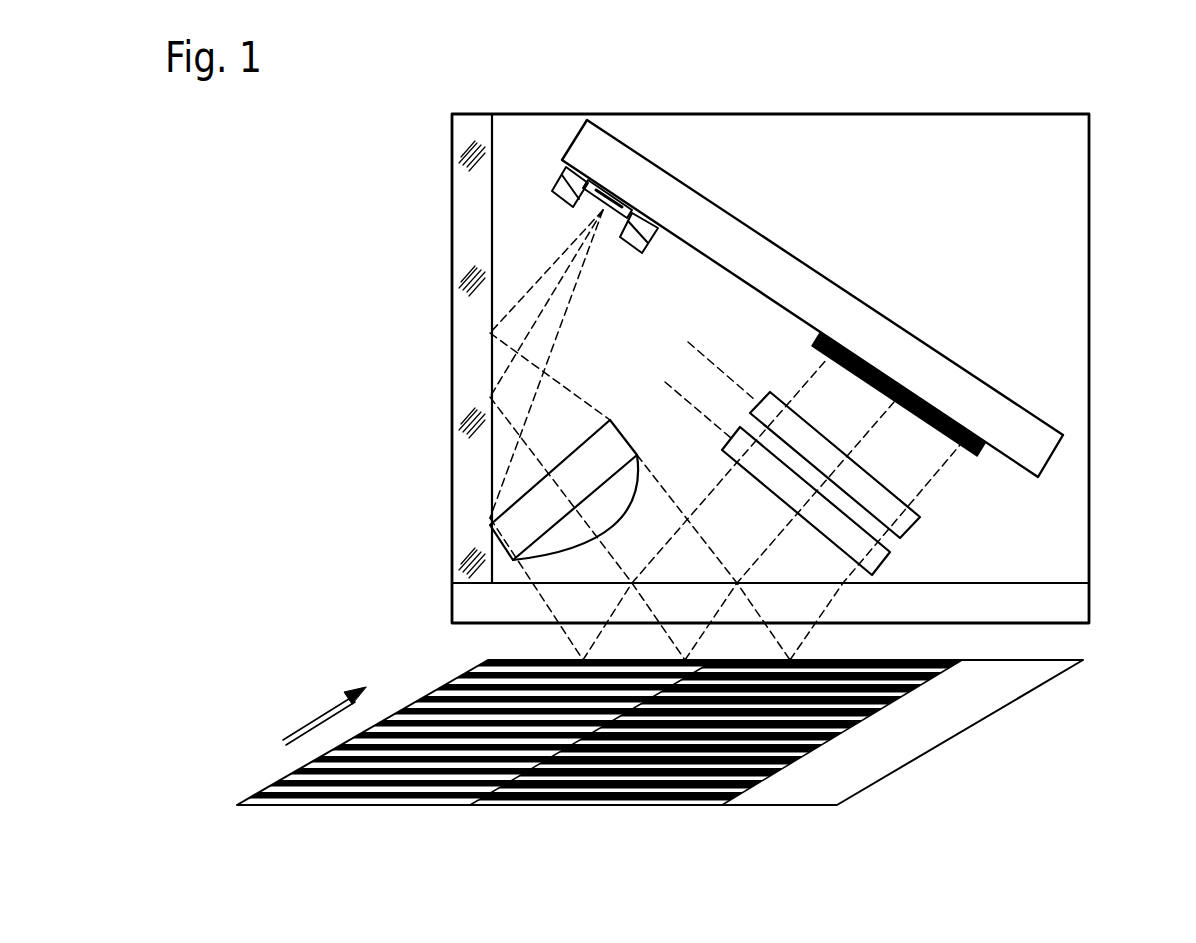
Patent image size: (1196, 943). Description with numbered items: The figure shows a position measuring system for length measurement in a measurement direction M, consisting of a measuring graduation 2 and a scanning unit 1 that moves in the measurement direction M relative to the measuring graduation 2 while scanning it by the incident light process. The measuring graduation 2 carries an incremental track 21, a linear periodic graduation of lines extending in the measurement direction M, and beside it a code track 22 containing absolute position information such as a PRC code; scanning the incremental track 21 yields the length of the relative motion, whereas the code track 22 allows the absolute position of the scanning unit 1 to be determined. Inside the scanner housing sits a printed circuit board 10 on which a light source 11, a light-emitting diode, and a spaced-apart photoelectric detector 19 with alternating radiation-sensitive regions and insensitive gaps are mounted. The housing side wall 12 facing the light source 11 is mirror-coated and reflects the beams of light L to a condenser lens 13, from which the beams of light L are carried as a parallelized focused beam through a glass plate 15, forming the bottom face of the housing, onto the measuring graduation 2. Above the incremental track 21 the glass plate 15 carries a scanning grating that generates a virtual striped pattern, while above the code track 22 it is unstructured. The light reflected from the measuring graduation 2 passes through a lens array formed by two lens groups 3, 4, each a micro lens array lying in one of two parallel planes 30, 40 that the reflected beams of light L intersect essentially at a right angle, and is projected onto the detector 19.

The scanning unit 1 is at (1084, 102).
The measuring graduation 2 is at (966, 740).
The lens group 3 is at (870, 555).
The lens group 4 is at (900, 522).
The printed circuit board 10 is at (782, 262).
The light source 11 is at (567, 192).
The side wall 12 is at (492, 247).
The condenser lens 13 is at (515, 520).
The glass plate 15 is at (452, 603).
The photoelectric detector 19 is at (985, 455).
The incremental track 21 is at (443, 770).
The code track 22 is at (743, 752).
The plane 30 is at (673, 390).
The plane 40 is at (712, 362).
The beams of light L is at (503, 371).
The measurement direction M is at (324, 715).